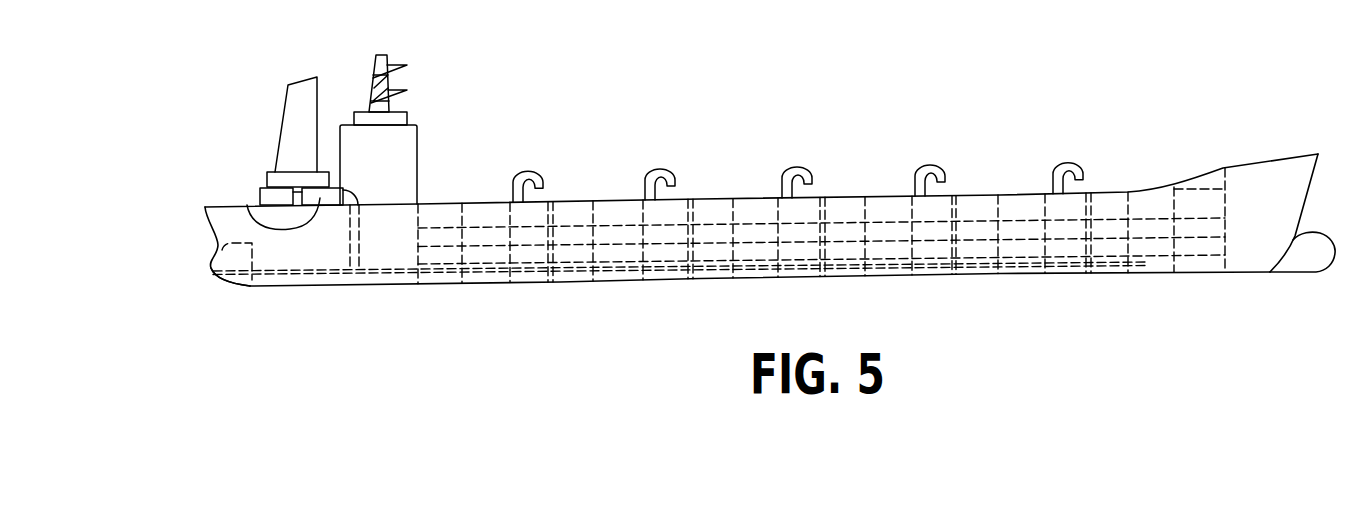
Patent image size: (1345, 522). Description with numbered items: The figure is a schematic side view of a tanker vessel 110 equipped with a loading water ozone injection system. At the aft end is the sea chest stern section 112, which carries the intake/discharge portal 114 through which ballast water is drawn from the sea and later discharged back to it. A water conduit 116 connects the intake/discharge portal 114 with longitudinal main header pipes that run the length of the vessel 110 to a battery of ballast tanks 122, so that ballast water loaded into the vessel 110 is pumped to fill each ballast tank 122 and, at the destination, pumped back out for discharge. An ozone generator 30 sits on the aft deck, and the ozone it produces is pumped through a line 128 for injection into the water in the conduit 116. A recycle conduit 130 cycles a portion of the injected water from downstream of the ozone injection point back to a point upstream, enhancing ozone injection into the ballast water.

The vessel 110 is at (1180, 84).
The sea chest stern section 112 is at (213, 266).
The intake/discharge portal 114 is at (217, 275).
The water conduit 116 is at (305, 273).
The recycle conduit 130 is at (378, 255).
The ozone generator 30 is at (247, 205).
The line 128 is at (362, 228).
The ballast tanks 122 is at (533, 212).